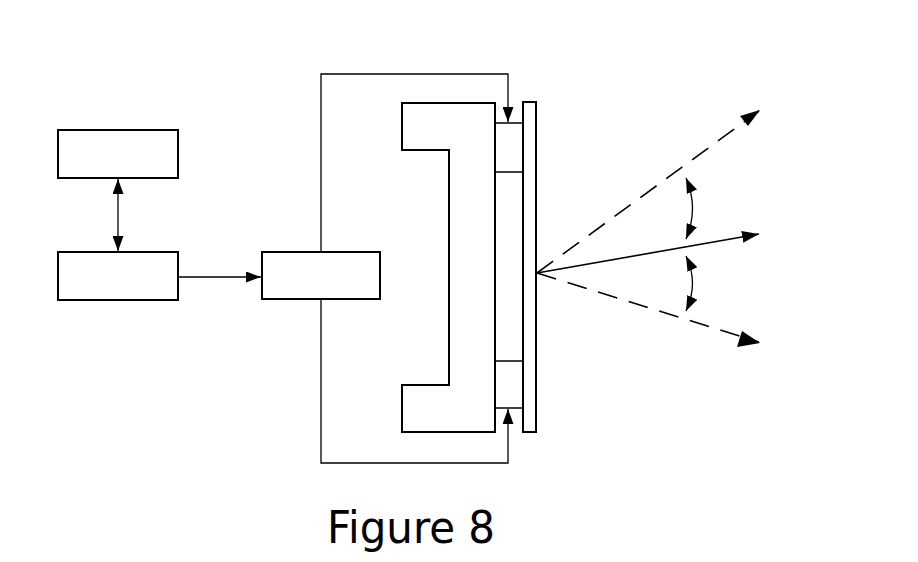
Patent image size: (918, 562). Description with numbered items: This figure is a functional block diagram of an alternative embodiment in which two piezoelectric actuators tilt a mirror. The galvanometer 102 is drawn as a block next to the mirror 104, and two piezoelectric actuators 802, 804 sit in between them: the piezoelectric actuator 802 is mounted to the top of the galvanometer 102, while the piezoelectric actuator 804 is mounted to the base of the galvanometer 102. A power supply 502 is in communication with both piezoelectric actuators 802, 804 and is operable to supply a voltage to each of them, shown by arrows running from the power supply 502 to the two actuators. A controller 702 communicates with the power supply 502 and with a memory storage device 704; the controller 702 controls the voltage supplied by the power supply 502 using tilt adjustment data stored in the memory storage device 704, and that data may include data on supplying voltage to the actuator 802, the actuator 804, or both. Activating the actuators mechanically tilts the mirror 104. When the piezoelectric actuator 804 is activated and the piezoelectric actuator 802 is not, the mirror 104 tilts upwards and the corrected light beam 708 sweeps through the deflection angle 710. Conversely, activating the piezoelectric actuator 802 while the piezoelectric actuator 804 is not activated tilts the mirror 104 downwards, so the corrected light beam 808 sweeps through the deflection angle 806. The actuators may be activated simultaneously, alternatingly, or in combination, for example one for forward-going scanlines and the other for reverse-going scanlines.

The galvanometer 102 is at (402, 118).
The mirror 104 is at (536, 130).
The power supply 502 is at (380, 252).
The controller 702 is at (177, 252).
The memory storage device 704 is at (178, 130).
The corrected light beam 708 is at (660, 183).
The deflection angle 710 is at (697, 203).
The piezoelectric actuator 802 is at (512, 172).
The piezoelectric actuator 804 is at (512, 361).
The deflection angle 806 is at (697, 279).
The corrected light beam 808 is at (653, 315).